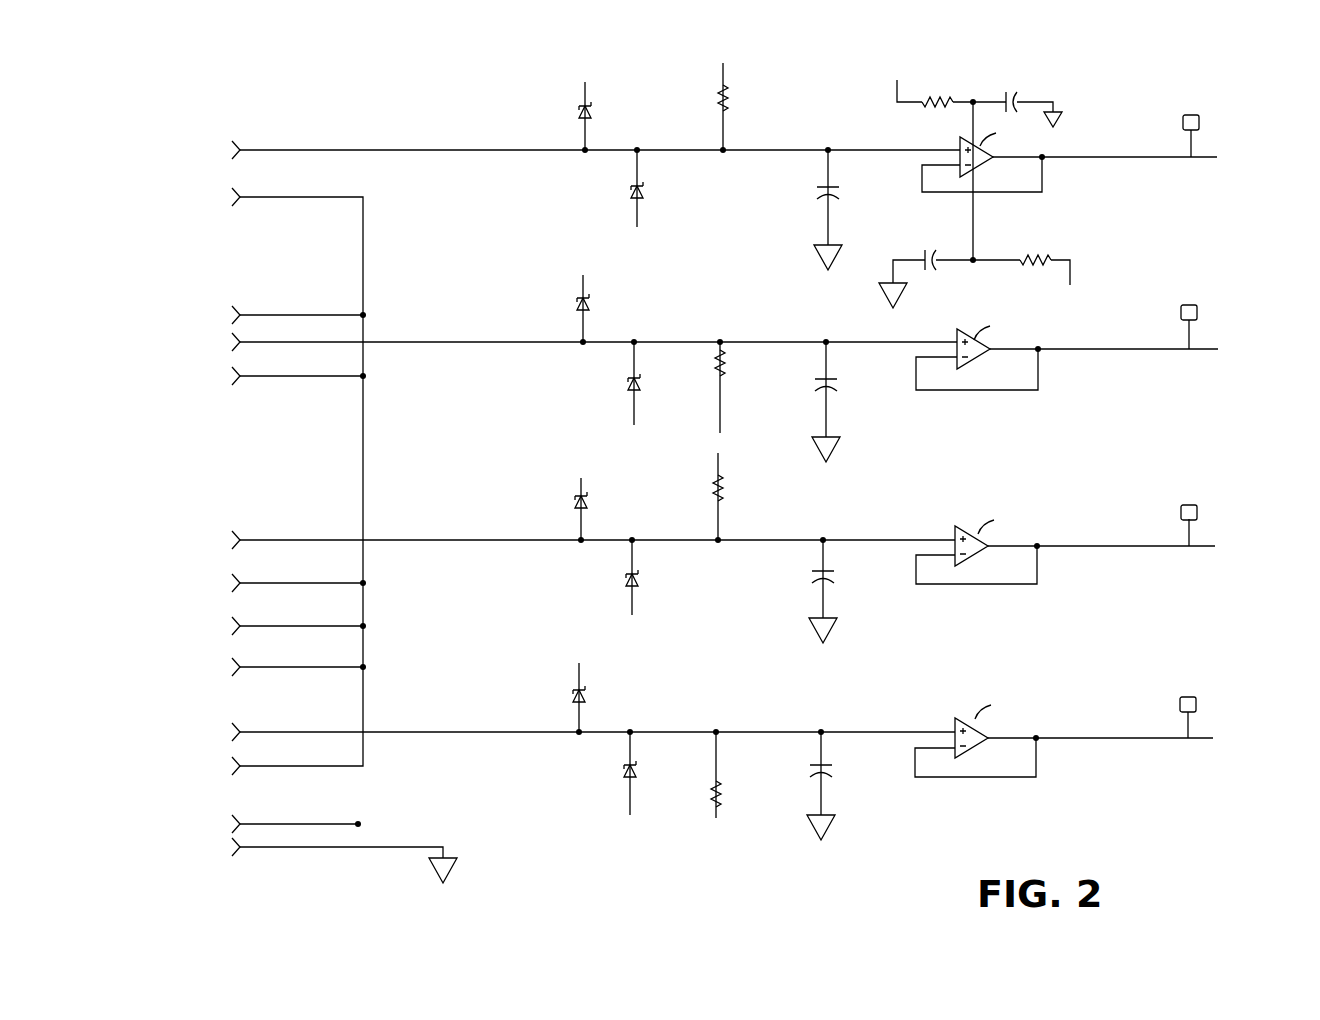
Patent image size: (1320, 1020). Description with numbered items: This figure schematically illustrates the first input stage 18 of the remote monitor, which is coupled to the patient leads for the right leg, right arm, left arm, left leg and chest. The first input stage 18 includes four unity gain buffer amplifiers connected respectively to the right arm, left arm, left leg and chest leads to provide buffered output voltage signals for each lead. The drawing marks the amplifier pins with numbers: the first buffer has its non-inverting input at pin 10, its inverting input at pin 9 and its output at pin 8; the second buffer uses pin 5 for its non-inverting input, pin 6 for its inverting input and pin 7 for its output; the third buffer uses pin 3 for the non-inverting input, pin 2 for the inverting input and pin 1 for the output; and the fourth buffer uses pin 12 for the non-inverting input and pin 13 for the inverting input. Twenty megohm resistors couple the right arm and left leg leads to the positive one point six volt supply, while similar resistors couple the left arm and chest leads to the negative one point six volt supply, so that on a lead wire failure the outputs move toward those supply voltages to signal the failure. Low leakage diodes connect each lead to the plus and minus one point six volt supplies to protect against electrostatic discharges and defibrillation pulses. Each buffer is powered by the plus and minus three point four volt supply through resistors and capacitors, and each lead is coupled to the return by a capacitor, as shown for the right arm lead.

The first input stage 18 is at (422, 123).
The U1 non-inverting input pin 10 is at (930, 141).
The U1 inverting input pin 9 is at (982, 174).
The U1 output pin 8 is at (1104, 151).
The U2 non-inverting input pin 5 is at (928, 334).
The U2 inverting input pin 6 is at (977, 369).
The U2 output pin 7 is at (1104, 341).
The U3 non-inverting input pin 3 is at (927, 531).
The U3 inverting input pin 2 is at (976, 565).
The U3 output pin 1 is at (1101, 536).
The U4 non-inverting input pin 12 is at (927, 724).
The U4 inverting input pin 13 is at (975, 757).